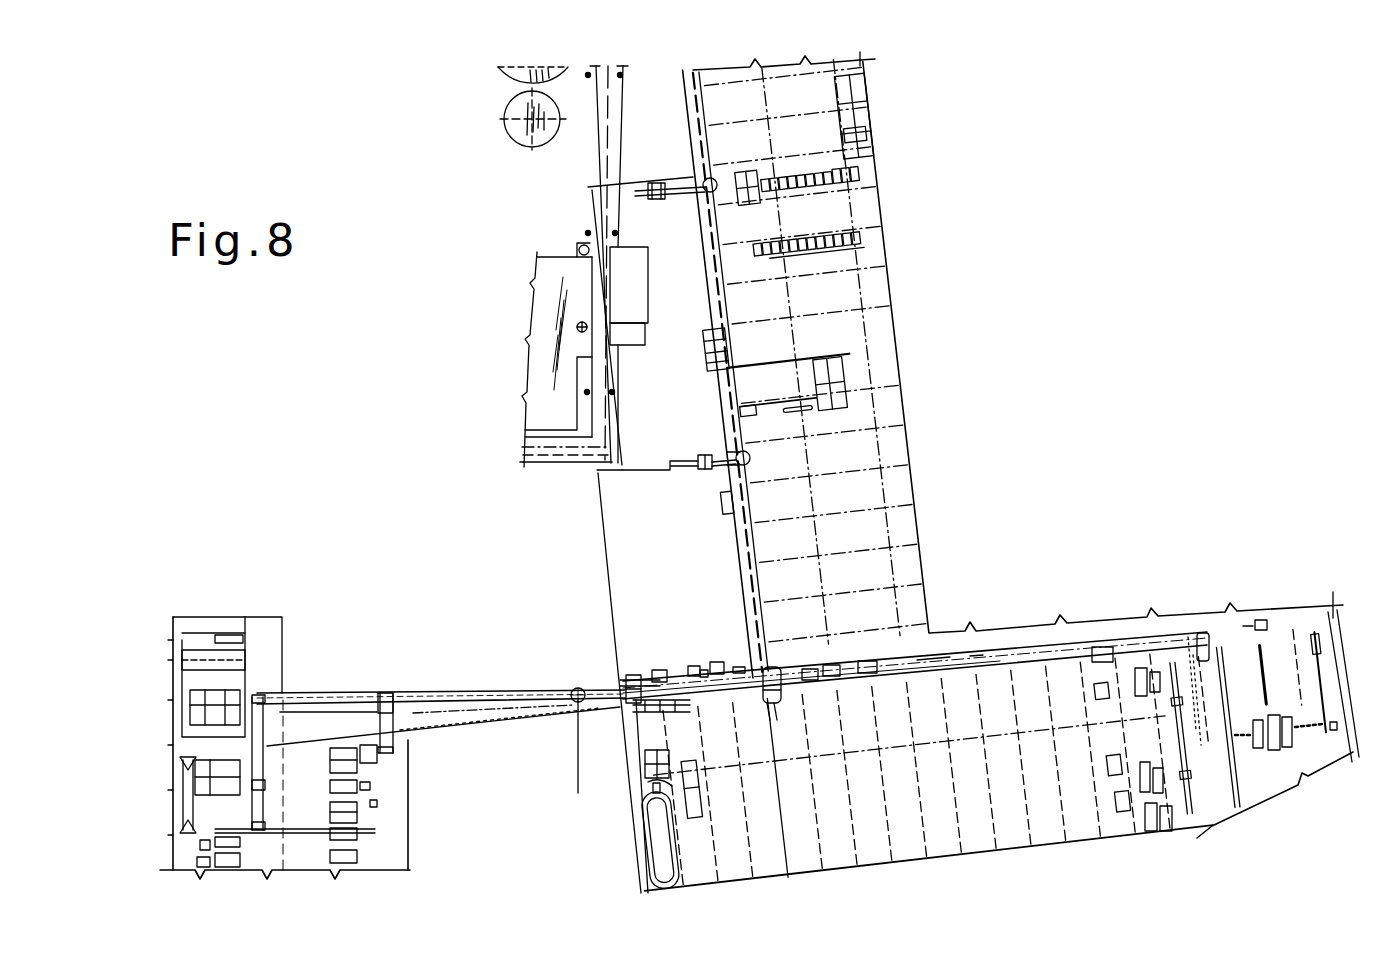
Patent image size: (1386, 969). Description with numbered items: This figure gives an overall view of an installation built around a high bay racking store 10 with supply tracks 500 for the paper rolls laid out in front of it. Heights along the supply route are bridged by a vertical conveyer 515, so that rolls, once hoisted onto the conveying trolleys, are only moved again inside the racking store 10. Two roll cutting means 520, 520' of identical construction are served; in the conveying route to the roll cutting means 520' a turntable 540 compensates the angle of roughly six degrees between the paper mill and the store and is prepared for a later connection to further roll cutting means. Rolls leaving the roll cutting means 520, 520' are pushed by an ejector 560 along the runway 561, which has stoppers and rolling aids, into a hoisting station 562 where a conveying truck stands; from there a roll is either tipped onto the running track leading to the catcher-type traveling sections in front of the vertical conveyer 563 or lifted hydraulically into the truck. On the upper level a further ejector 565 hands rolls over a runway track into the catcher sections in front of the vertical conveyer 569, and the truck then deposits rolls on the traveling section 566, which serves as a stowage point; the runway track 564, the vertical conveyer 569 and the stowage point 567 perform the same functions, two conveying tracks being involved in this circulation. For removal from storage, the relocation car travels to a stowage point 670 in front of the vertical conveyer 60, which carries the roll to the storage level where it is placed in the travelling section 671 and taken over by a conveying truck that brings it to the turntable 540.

The high bay racking store 10 is at (620, 550).
The vertical conveyer 60 is at (705, 456).
The supply tracks 500 is at (482, 690).
The vertical conveyer 515 is at (698, 475).
The roll cutting means 520 is at (310, 748).
The roll cutting means 520' is at (331, 710).
The turntable 540 is at (577, 702).
The ejector 560 is at (633, 720).
The runway 561 is at (640, 770).
The hoisting station 562 is at (620, 677).
The vertical conveyer 563 is at (630, 675).
The runway track 564 is at (740, 667).
The ejector 565 is at (733, 697).
The traveling section 566 is at (660, 668).
The stowage point 567 is at (695, 670).
The vertical conveyer 569 is at (717, 663).
The stowage point 670 is at (597, 472).
The travelling section 671 is at (723, 462).